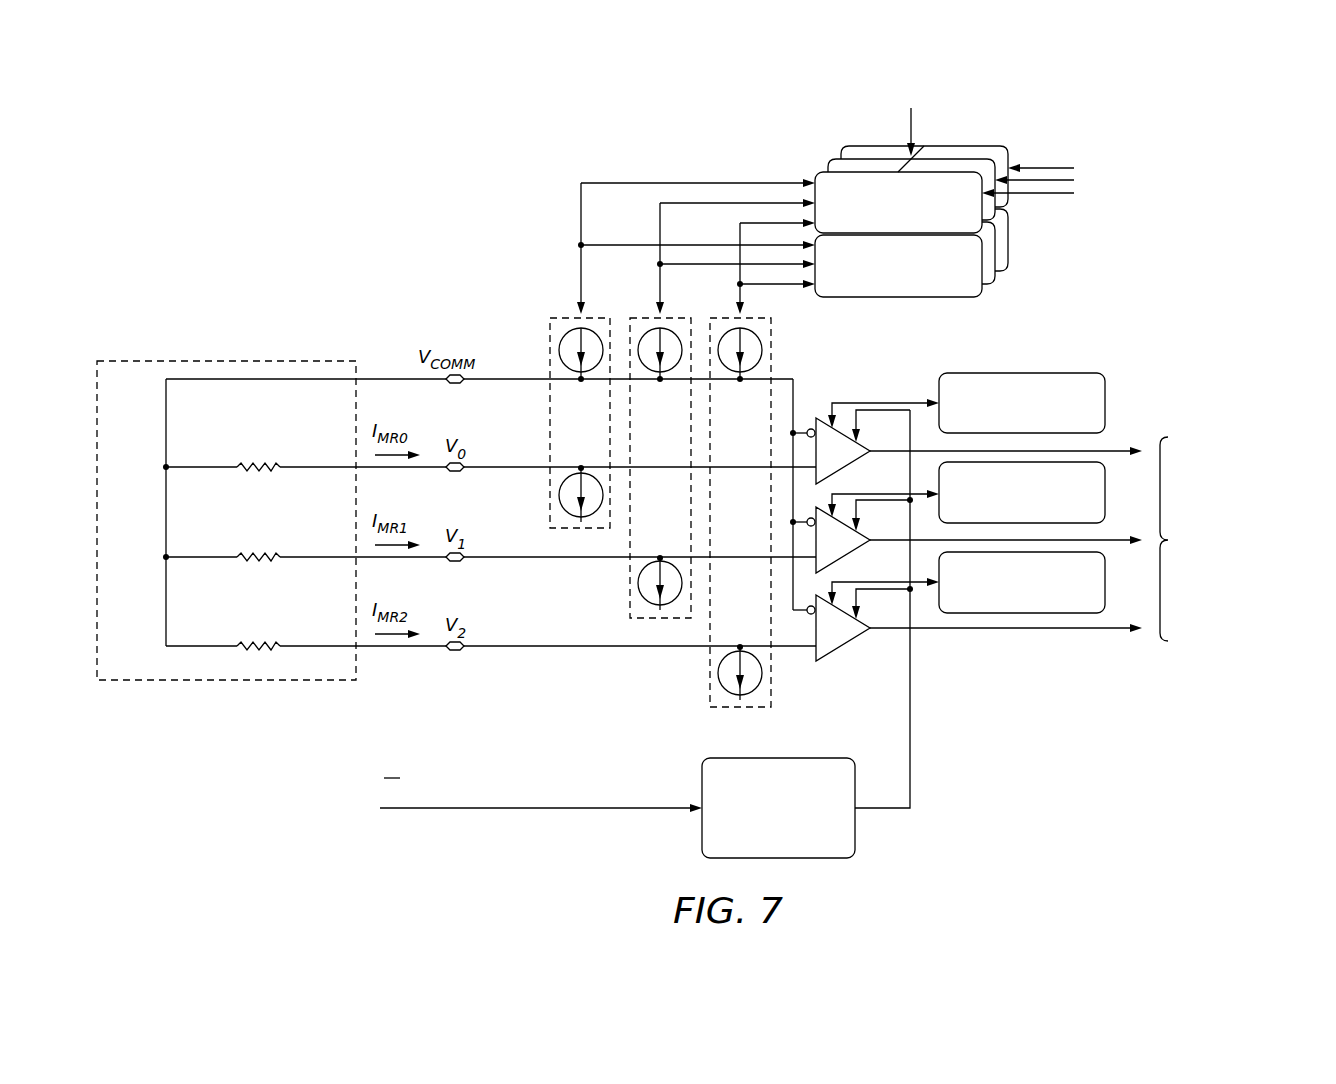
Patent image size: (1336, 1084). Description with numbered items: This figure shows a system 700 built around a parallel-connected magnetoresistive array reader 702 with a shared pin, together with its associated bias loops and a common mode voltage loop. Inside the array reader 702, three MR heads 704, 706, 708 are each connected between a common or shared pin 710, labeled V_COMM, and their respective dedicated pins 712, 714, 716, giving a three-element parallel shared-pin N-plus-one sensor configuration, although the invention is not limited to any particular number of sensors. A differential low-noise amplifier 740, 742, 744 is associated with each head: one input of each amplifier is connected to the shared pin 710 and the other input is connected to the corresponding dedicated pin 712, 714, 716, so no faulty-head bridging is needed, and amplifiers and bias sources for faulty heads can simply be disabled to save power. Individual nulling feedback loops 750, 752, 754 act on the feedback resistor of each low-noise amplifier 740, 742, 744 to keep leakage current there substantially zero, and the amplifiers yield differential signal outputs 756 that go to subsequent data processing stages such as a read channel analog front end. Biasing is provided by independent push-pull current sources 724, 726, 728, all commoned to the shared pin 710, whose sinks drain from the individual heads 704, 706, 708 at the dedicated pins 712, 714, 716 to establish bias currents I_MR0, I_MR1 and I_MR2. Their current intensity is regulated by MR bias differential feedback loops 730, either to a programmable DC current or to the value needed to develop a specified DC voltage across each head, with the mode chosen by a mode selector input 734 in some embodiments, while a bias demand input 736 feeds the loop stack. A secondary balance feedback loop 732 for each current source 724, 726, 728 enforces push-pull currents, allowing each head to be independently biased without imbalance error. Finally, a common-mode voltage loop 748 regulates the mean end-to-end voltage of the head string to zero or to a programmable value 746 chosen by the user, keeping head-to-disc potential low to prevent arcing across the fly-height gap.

The system 700 is at (1179, 113).
The array reader 702 is at (226, 520).
The MR head 704 is at (266, 469).
The MR head 706 is at (266, 559).
The MR head 708 is at (266, 648).
The shared pin 710 is at (506, 377).
The dedicated pin 712 is at (506, 465).
The dedicated pin 714 is at (506, 555).
The dedicated pin 716 is at (506, 644).
The push-pull current source 724 is at (580, 423).
The push-pull current source 726 is at (660, 468).
The push-pull current source 728 is at (740, 512).
The MR bias differential feedback loop 730 is at (911, 189).
The balance feedback loop 732 is at (911, 253).
The mode selector input 734 is at (910, 122).
The I/V MR bias demand input 736 is at (1064, 212).
The differential low-noise amplifier 740 is at (838, 470).
The differential low-noise amplifier 742 is at (838, 559).
The differential low-noise amplifier 744 is at (838, 647).
The programmable value 746 is at (618, 812).
The common-mode voltage loop 748 is at (806, 634).
The nulling feedback loop 750 is at (1022, 403).
The nulling feedback loop 752 is at (1022, 492).
The nulling feedback loop 754 is at (1022, 582).
The differential signal outputs 756 is at (1170, 447).